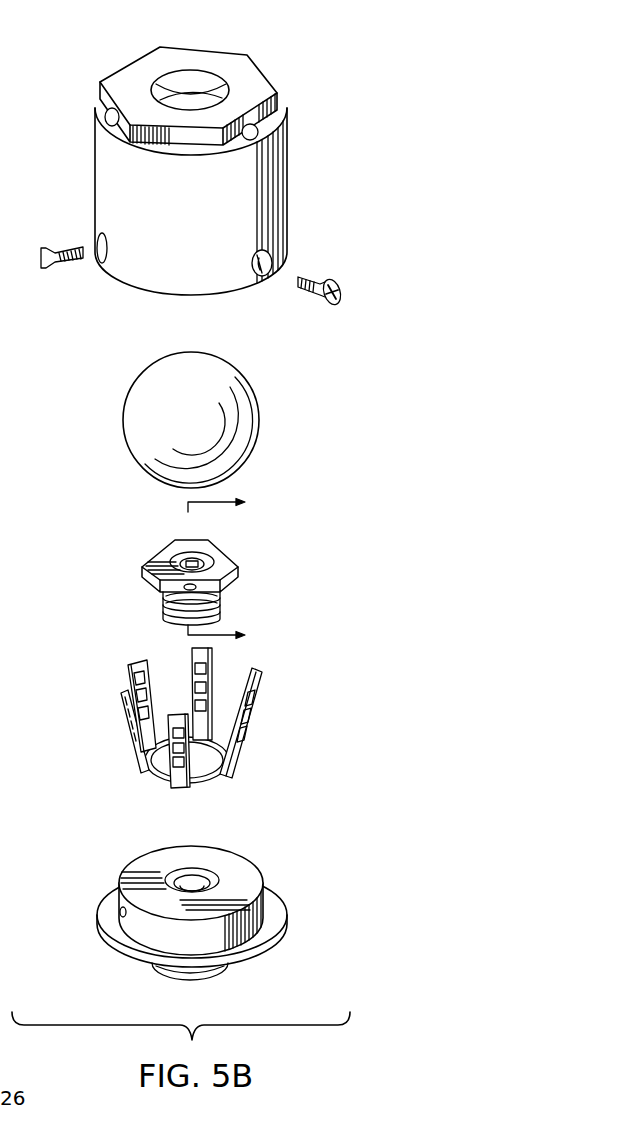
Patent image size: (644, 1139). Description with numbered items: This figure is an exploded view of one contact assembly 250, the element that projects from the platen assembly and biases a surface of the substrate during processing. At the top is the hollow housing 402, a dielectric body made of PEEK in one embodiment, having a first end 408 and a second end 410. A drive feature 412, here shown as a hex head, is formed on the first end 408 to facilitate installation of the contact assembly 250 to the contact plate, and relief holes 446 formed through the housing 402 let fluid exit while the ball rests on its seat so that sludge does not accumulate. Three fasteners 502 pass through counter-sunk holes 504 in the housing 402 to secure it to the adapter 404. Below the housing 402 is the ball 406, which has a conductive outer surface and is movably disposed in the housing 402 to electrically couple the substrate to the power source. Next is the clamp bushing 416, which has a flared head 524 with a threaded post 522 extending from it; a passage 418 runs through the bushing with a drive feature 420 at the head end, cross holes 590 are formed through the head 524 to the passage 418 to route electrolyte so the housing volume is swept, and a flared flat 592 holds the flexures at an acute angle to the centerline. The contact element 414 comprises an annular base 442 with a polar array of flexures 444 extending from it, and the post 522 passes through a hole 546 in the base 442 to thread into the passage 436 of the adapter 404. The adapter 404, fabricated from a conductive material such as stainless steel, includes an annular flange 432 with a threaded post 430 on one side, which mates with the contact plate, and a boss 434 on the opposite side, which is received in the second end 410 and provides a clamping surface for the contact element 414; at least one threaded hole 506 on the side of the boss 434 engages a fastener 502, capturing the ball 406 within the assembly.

The contact assembly 250 is at (100, 58).
The hollow housing 402 is at (290, 182).
The adapter 404 is at (290, 892).
The ball 406 is at (145, 388).
The first end 408 is at (277, 80).
The second end 410 is at (147, 292).
The drive feature 412 is at (192, 57).
The contact element 414 is at (120, 740).
The clamp bushing 416 is at (233, 560).
The passage 418 is at (197, 561).
The drive feature 420 is at (178, 552).
The threaded post 430 is at (167, 977).
The annular flange 432 is at (110, 908).
The boss 434 is at (152, 863).
The passage 436 is at (209, 875).
The annular base 442 is at (163, 782).
The flexures 444 is at (132, 662).
The relief holes 446 is at (100, 103).
The fastener 502 is at (312, 293).
The hole 504 is at (258, 262).
The threaded hole 506 is at (122, 913).
The threaded post 522 is at (218, 607).
The flared head 524 is at (147, 577).
The hole 546 is at (205, 753).
The cross hole 590 is at (157, 562).
The flared flat 592 is at (238, 580).